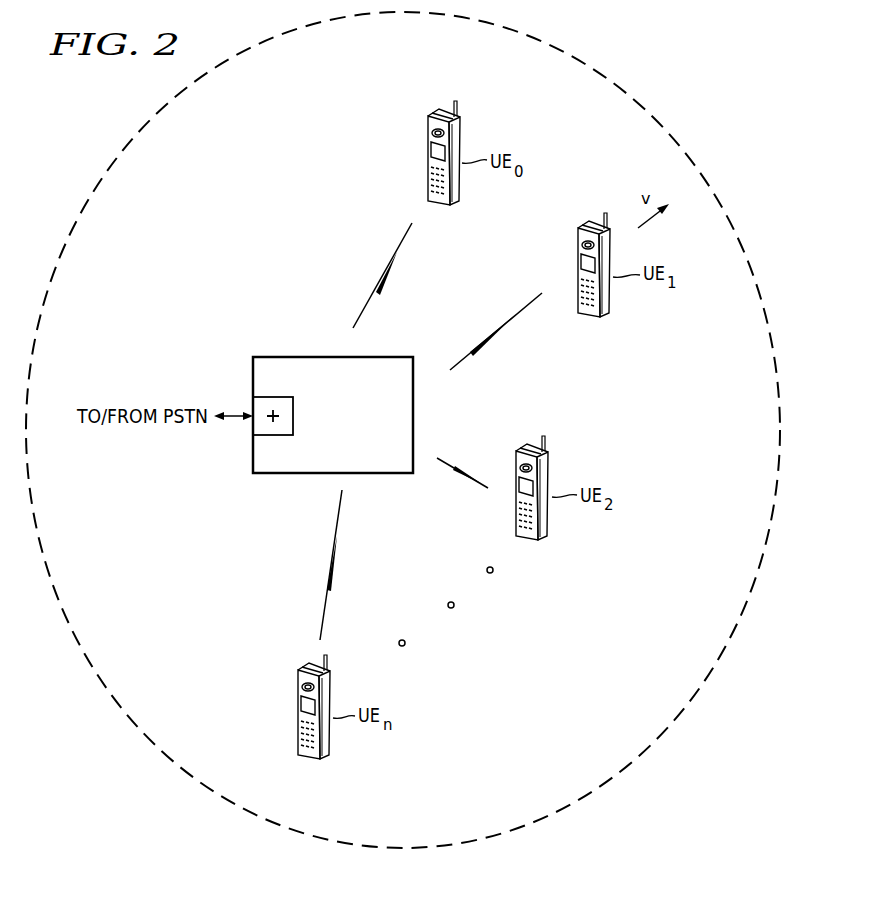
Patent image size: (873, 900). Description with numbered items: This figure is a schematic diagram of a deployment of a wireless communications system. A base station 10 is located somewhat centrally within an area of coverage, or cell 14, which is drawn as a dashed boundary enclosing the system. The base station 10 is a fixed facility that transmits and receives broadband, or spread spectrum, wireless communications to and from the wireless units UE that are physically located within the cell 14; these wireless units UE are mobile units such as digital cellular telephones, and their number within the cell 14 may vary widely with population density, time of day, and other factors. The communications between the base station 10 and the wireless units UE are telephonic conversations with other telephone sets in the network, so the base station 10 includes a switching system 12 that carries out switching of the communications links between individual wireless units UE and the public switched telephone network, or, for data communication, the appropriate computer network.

The base station 10 is at (333, 357).
The switching system 12 is at (293, 415).
The cell 14 is at (596, 70).